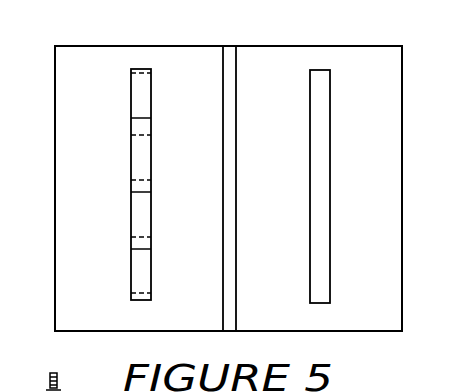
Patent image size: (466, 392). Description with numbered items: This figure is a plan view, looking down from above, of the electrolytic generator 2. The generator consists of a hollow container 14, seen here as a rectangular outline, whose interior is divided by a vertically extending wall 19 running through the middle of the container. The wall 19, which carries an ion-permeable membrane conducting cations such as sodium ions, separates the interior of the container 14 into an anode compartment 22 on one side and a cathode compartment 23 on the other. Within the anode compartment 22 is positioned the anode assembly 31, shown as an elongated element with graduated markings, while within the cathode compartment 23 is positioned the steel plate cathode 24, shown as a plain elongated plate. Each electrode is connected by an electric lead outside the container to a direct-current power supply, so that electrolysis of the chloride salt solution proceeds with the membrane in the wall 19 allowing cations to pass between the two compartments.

The electrolytic generator 2 is at (43, 290).
The hollow container 14 is at (62, 165).
The vertically extending wall 19 is at (230, 110).
The anode compartment 22 is at (90, 57).
The cathode compartment 23 is at (394, 36).
The steel plate cathode 24 is at (322, 198).
The anode assembly 31 is at (118, 180).